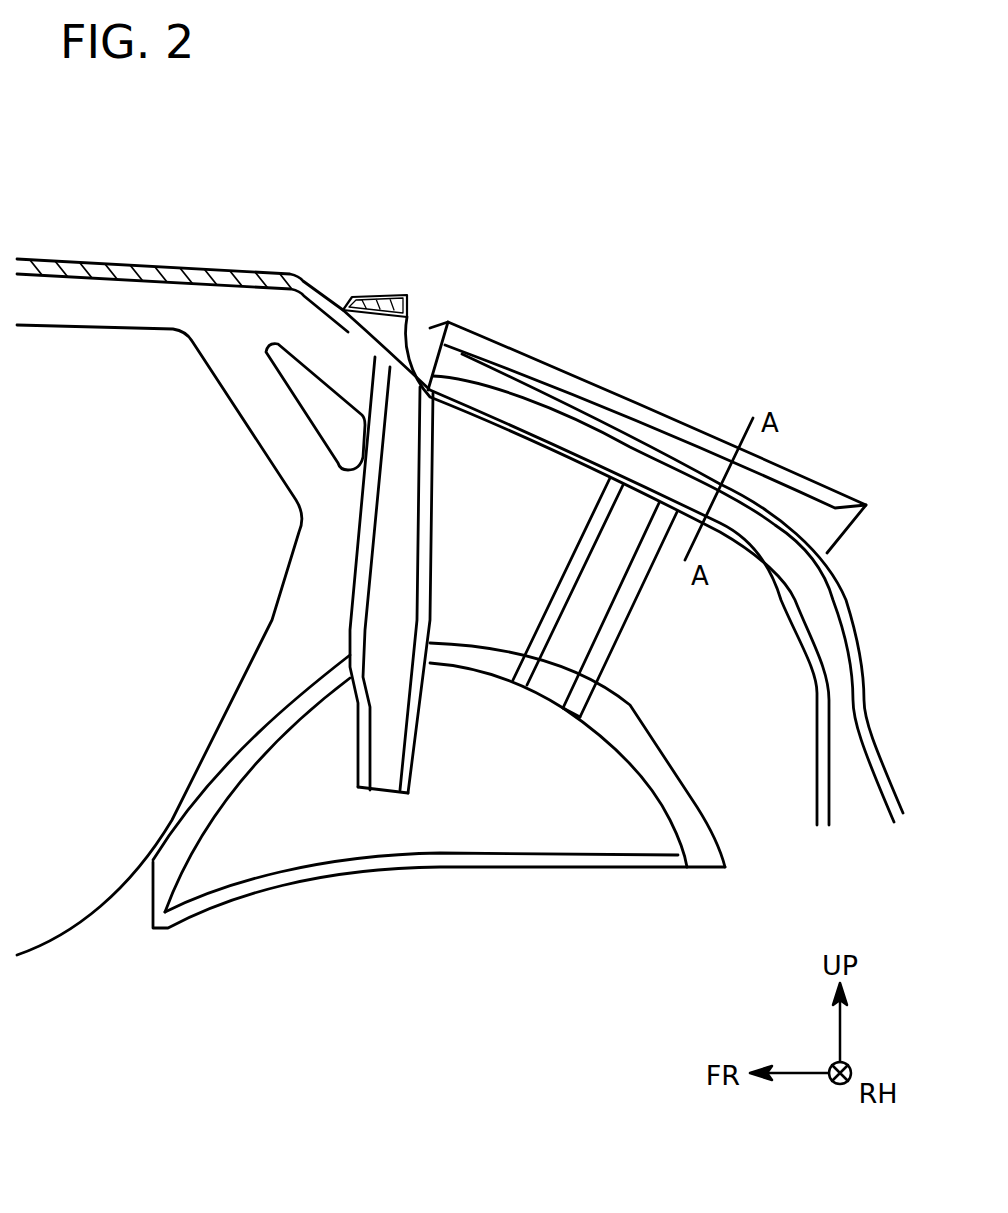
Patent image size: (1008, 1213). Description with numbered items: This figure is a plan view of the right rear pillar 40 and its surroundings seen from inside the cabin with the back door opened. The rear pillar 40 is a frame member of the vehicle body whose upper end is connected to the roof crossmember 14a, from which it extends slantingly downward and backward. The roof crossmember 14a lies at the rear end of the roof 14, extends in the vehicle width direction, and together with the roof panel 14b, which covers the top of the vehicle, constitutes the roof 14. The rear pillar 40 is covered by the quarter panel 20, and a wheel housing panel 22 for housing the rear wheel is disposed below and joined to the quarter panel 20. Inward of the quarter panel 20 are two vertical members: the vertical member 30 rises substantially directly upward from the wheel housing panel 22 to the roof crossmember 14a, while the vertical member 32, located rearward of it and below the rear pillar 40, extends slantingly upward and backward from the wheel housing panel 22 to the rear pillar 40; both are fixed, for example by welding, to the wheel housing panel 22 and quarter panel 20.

The roof 14 is at (272, 181).
The roof crossmember 14a is at (385, 293).
The roof panel 14b is at (259, 270).
The quarter panel 20 is at (660, 627).
The wheel housing panel 22 is at (452, 792).
The vertical member 30 is at (390, 642).
The vertical member 32 is at (627, 537).
The rear pillar 40 is at (568, 430).